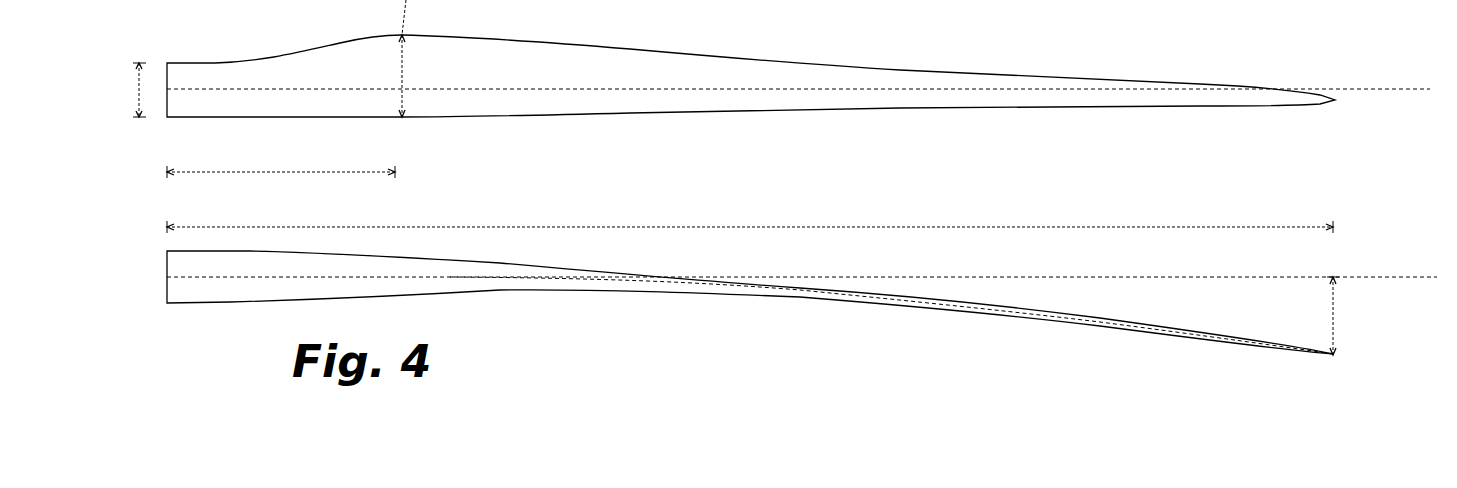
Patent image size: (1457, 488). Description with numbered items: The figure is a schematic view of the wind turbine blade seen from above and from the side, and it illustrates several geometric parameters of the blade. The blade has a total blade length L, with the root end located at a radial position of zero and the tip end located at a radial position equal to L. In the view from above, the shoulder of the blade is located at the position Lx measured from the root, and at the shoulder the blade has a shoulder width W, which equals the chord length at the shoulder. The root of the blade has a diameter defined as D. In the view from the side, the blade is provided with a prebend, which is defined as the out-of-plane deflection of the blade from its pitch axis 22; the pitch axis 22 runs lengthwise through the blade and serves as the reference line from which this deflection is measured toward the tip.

The pitch axis 22 is at (630, 89).
The diameter of the root D is at (131, 90).
The shoulder width W is at (415, 58).
The shoulder position Lx is at (281, 160).
The total blade length L is at (750, 217).